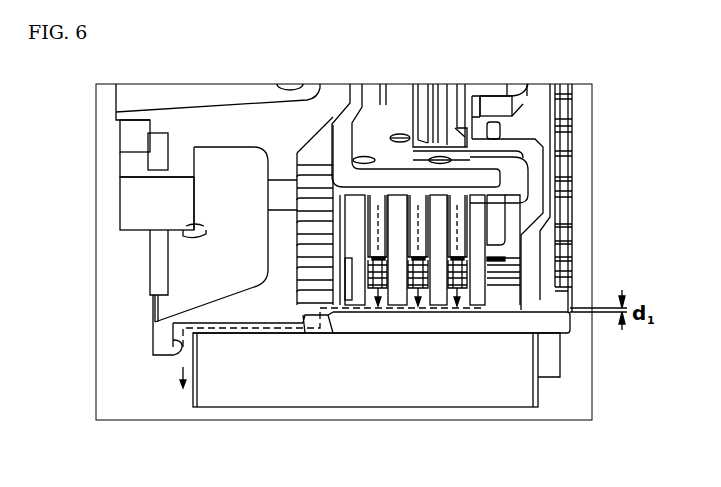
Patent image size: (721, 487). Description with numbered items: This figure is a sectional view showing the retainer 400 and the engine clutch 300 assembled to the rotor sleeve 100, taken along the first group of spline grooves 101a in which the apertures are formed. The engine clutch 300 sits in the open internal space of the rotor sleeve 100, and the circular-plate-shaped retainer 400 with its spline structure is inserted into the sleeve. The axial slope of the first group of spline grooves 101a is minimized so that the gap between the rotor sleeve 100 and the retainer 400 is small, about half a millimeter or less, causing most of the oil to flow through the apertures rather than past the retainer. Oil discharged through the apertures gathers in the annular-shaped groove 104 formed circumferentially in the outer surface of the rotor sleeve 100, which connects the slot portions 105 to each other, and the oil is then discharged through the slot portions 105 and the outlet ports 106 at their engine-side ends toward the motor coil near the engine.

The rotor sleeve 100 is at (248, 246).
The first group of spline grooves 101a is at (416, 308).
The annular-shaped groove 104 is at (328, 318).
The slot portions 105 is at (257, 324).
The outlet ports 106 is at (176, 343).
The engine clutch 300 is at (463, 225).
The retainer 400 is at (532, 122).